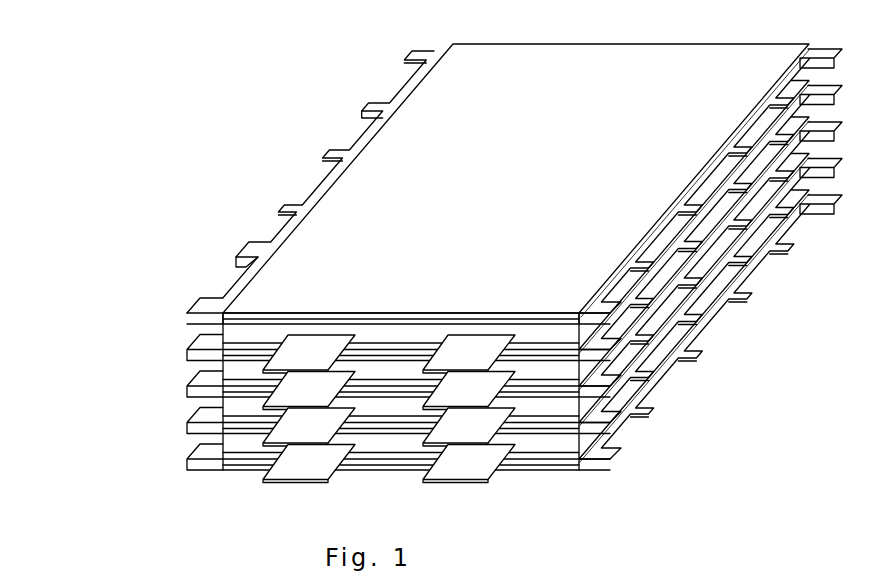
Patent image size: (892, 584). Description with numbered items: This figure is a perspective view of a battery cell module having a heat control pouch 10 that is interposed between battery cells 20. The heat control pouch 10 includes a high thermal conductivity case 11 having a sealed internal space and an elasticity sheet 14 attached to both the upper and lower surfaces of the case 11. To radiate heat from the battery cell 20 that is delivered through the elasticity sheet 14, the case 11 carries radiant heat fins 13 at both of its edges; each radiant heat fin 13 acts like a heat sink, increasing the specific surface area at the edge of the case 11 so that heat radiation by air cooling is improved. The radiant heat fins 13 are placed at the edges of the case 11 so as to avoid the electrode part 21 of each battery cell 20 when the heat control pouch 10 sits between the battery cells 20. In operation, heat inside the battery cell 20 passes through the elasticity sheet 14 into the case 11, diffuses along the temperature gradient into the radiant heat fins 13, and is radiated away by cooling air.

The heat control pouch 10 is at (430, 178).
The high thermal conductivity case 11 is at (237, 317).
The radiant heat fin 13 is at (413, 60).
The elasticity sheet 14 is at (258, 297).
The battery cell 20 is at (637, 393).
The electrode part 21 is at (287, 357).